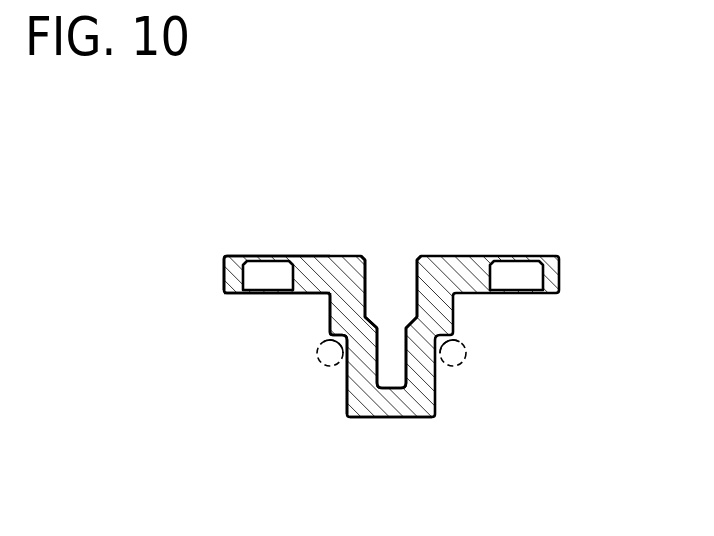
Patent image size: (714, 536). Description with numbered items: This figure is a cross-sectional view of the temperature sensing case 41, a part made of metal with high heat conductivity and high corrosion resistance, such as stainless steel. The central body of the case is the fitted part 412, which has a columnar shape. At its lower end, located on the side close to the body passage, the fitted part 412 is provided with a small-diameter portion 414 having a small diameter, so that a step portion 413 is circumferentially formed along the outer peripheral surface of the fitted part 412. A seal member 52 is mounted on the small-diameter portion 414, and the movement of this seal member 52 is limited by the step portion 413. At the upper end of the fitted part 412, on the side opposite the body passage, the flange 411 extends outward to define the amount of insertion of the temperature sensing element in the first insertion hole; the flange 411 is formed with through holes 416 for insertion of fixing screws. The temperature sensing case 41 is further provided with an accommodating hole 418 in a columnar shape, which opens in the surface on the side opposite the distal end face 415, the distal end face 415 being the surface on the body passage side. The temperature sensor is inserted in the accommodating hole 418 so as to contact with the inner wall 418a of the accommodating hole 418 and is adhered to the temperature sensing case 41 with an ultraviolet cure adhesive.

The temperature sensing case 41 is at (520, 191).
The flange 411 is at (226, 277).
The fitted part 412 is at (330, 318).
The step portion 413 is at (336, 343).
The small-diameter portion 414 is at (347, 396).
The distal end face 415 is at (415, 417).
The through holes 416 is at (265, 275).
The accommodating hole 418 is at (387, 359).
The inner wall 418a is at (402, 358).
The seal member 52 is at (454, 367).